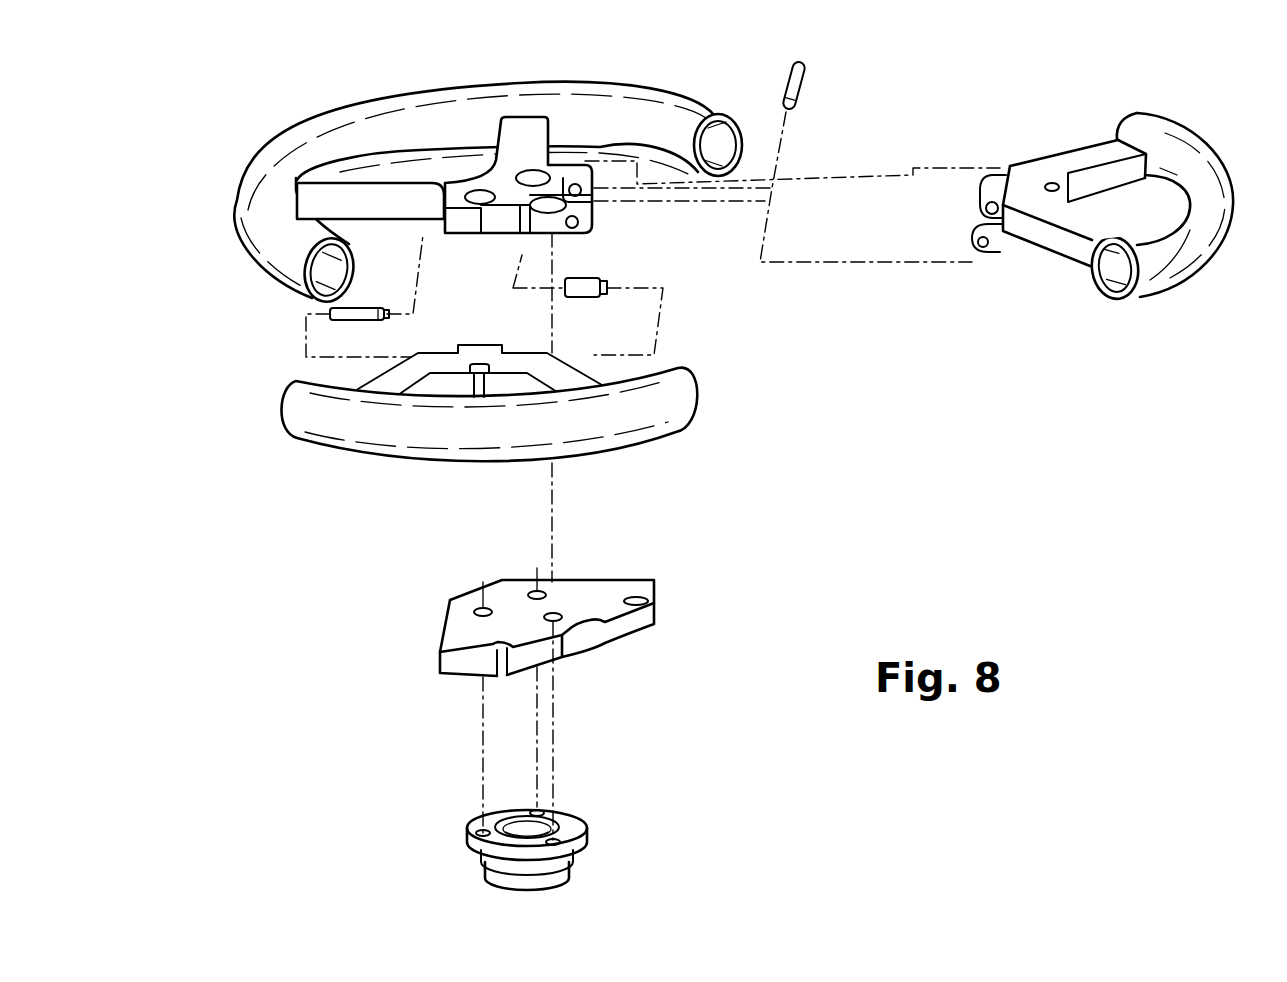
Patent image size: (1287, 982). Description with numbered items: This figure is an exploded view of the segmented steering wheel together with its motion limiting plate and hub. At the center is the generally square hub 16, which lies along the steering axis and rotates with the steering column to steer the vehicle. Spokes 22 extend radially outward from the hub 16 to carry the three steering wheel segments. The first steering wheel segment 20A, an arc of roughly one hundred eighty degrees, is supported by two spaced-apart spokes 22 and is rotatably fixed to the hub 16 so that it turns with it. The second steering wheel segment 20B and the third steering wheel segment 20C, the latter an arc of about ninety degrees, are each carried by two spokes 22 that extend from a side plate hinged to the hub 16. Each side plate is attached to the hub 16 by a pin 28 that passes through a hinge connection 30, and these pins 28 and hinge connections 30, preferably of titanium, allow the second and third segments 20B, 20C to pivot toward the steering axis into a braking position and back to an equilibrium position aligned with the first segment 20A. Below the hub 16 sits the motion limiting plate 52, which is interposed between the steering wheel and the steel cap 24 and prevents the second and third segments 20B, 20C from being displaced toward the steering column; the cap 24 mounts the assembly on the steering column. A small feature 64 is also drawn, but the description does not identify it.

The hub 16 is at (506, 177).
The first steering wheel segment 20A is at (540, 84).
The second steering wheel segment 20B is at (667, 408).
The third steering wheel segment 20C is at (1156, 290).
The spoke 22 is at (522, 133).
The cap 24 is at (567, 826).
The pin 28 is at (797, 80).
The hinge connection 30 is at (459, 243).
The motion limiting plate 52 is at (613, 583).
The locating pin / hole 64 is at (469, 374).